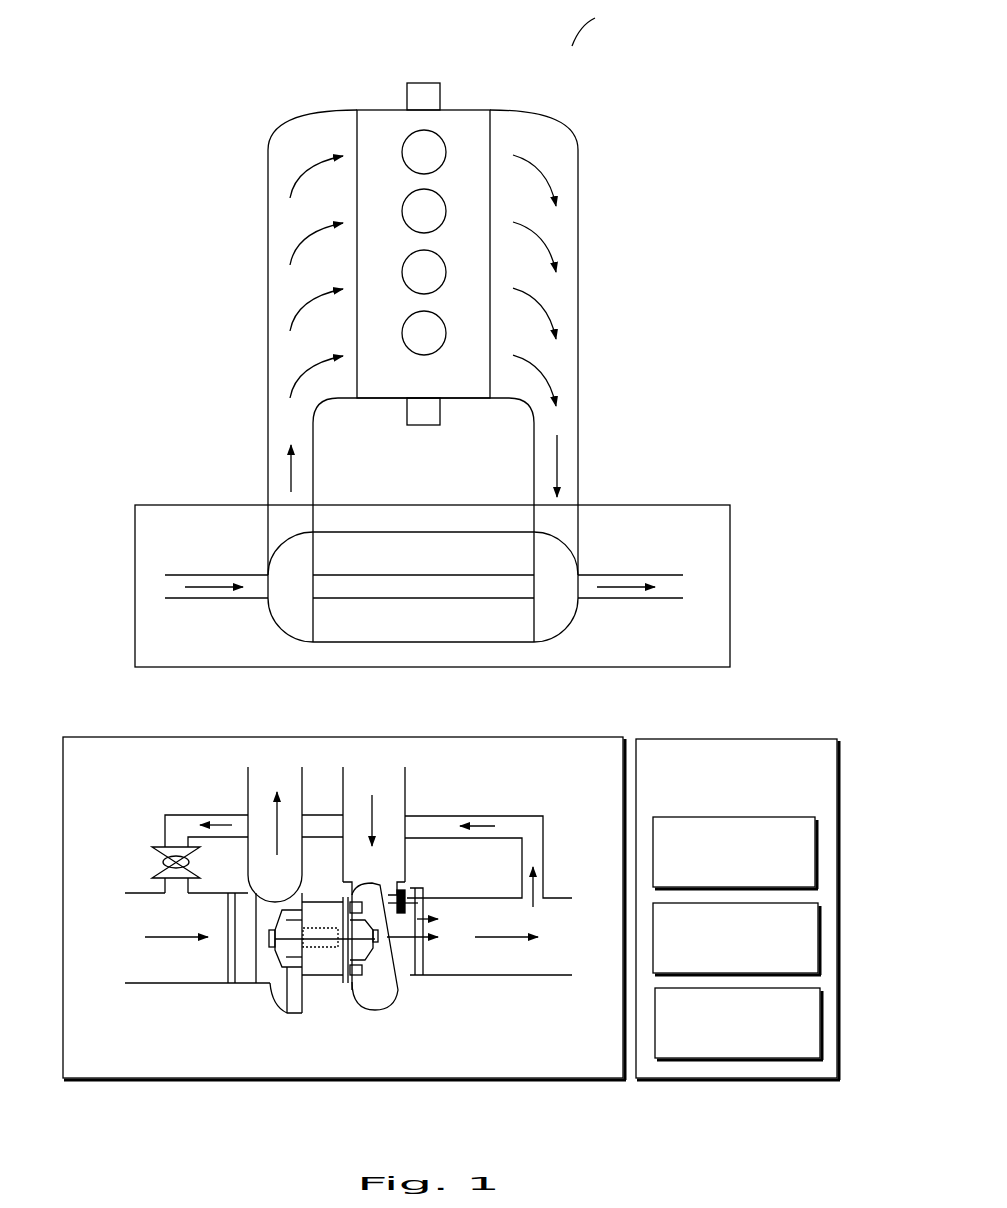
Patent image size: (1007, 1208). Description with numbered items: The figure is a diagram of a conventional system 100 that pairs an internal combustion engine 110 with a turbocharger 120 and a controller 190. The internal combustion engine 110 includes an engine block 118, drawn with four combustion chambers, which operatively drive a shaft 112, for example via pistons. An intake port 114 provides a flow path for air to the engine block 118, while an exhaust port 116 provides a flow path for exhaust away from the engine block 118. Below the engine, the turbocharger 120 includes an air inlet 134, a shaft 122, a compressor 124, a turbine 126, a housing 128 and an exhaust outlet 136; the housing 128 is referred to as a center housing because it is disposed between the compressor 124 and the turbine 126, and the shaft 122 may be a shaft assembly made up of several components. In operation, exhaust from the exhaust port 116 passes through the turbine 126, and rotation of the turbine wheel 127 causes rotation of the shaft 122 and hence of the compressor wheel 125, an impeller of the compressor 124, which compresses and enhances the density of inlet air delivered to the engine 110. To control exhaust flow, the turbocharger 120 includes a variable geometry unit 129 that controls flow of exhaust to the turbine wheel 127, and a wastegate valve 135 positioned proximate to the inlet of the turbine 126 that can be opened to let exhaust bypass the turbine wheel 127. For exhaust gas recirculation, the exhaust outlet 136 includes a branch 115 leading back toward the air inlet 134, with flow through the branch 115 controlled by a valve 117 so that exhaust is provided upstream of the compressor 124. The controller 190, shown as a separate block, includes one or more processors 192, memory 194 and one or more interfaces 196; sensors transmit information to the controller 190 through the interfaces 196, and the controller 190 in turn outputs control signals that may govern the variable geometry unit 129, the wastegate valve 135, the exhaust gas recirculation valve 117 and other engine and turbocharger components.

The system 100 is at (572, 44).
The internal combustion engine 110 is at (388, 108).
The shaft 112 is at (424, 82).
The intake port 114 is at (285, 128).
The branch 115 is at (175, 815).
The exhaust port 116 is at (576, 143).
The valve 117 is at (158, 847).
The engine block 118 is at (443, 391).
The turbocharger 120 is at (632, 505).
The shaft 122 is at (423, 598).
The compressor 124 is at (297, 608).
The compressor wheel 125 is at (290, 963).
The turbine 126 is at (555, 605).
The turbine wheel 127 is at (370, 952).
The housing 128 is at (447, 565).
The variable geometry unit 129 is at (343, 982).
The air inlet 134 is at (233, 575).
The wastegate valve 135 is at (407, 883).
The exhaust outlet 136 is at (634, 575).
The controller 190 is at (718, 804).
The processors 192 is at (716, 874).
The memory 194 is at (717, 961).
The interfaces 196 is at (739, 1024).